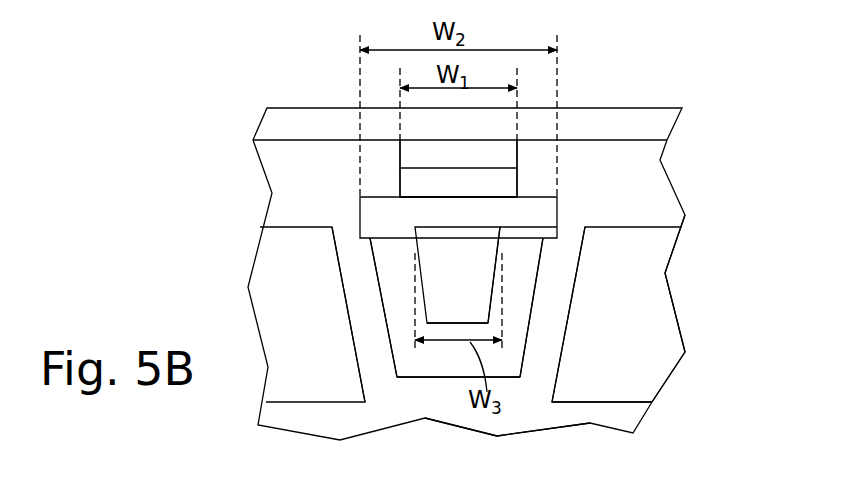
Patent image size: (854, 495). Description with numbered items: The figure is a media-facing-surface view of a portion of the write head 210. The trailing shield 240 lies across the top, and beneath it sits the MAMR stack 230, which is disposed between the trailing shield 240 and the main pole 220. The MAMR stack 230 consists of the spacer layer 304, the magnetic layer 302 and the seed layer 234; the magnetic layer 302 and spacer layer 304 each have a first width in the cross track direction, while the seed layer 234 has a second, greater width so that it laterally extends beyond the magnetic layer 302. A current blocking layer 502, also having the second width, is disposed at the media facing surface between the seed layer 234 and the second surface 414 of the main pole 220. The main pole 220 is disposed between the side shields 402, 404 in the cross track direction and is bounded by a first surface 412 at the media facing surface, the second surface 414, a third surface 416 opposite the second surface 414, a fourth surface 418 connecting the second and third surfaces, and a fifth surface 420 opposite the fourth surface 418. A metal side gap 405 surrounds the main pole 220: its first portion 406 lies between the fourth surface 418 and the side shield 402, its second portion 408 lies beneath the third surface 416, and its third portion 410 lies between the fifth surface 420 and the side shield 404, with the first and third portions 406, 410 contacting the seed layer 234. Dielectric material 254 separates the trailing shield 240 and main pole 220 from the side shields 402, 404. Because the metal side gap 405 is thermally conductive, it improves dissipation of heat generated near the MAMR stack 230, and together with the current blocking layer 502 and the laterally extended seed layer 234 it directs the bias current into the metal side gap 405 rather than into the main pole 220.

The write head 210 is at (190, 147).
The main pole 220 is at (481, 283).
The MAMR stack 230 is at (540, 176).
The seed layer 234 is at (533, 210).
The trailing shield 240 is at (481, 138).
The dielectric material 254 is at (547, 322).
The magnetic layer 302 is at (422, 183).
The spacer layer 304 is at (422, 155).
The side shield 402 is at (643, 322).
The side shield 404 is at (292, 245).
The metal side gap 405 is at (558, 379).
The first portion of the metal side gap 406 is at (503, 365).
The second portion of the metal side gap 408 is at (470, 360).
The third portion of the metal side gap 410 is at (403, 287).
The first surface 412 is at (500, 257).
The second surface 414 is at (500, 245).
The third surface 416 is at (445, 318).
The fourth surface 418 is at (500, 277).
The fifth surface 420 is at (405, 255).
The current blocking layer 502 is at (508, 232).